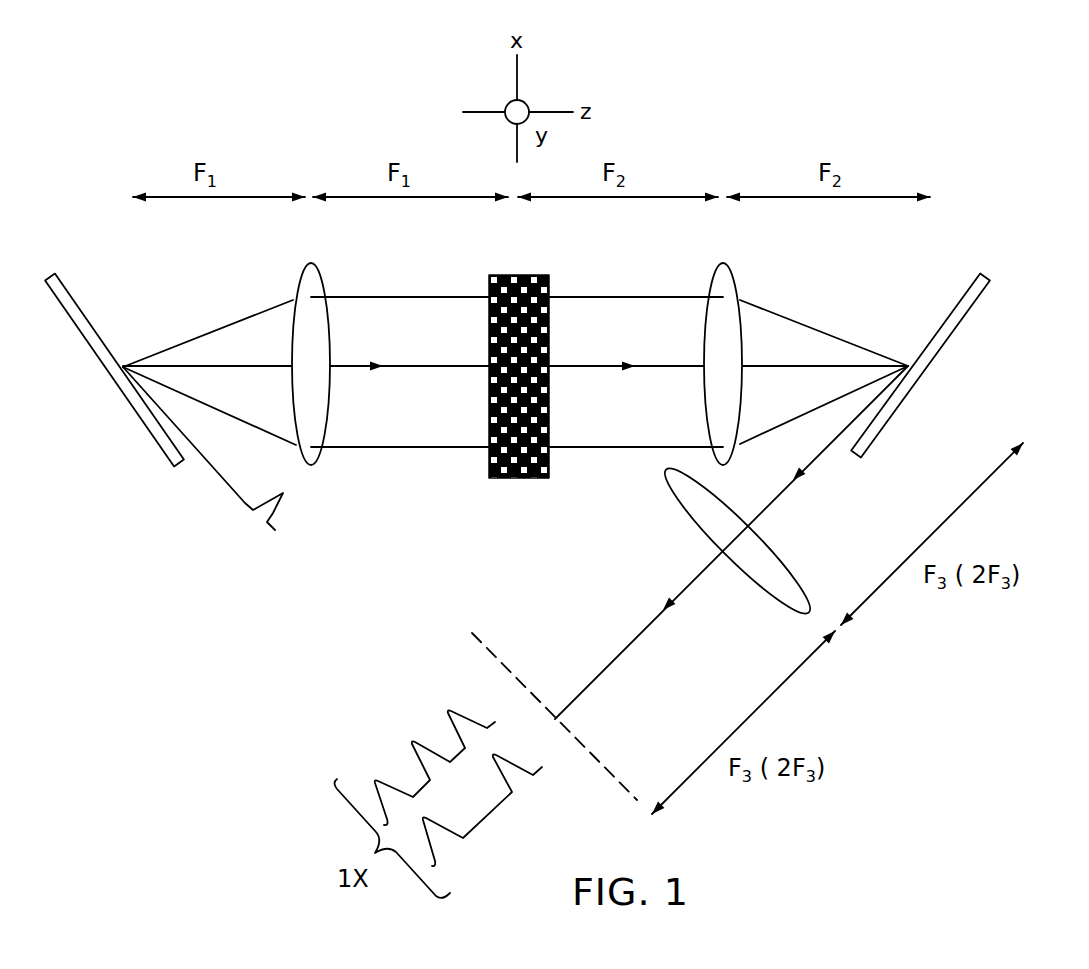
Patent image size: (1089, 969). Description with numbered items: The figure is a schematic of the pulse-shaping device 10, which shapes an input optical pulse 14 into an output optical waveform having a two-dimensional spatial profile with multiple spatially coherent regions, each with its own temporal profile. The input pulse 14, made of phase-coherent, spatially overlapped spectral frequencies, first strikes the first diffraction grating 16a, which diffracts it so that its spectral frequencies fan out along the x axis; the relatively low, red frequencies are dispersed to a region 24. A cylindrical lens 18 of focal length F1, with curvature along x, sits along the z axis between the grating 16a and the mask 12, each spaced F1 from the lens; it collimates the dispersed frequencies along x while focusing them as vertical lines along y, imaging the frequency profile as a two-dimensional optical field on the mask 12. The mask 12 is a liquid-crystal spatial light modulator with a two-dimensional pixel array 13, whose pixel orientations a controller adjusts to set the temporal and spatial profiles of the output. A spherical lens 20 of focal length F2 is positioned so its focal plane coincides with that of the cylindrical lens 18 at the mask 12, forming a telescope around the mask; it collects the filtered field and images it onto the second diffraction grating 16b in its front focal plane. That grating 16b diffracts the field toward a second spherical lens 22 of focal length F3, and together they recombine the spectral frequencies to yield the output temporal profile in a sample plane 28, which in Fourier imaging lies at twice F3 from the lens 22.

The pulse-shaping device 10 is at (163, 640).
The mask 12 is at (540, 274).
The two-dimensional pixel array 13 is at (487, 398).
The input optical pulse 14 is at (280, 513).
The first diffraction grating 16a is at (70, 298).
The second diffraction grating 16b is at (968, 311).
The cylindrical lens 18 is at (330, 325).
The spherical lens 20 is at (747, 329).
The second spherical lens 22 is at (397, 318).
The region 24 is at (395, 430).
The sample plane 28 is at (456, 343).